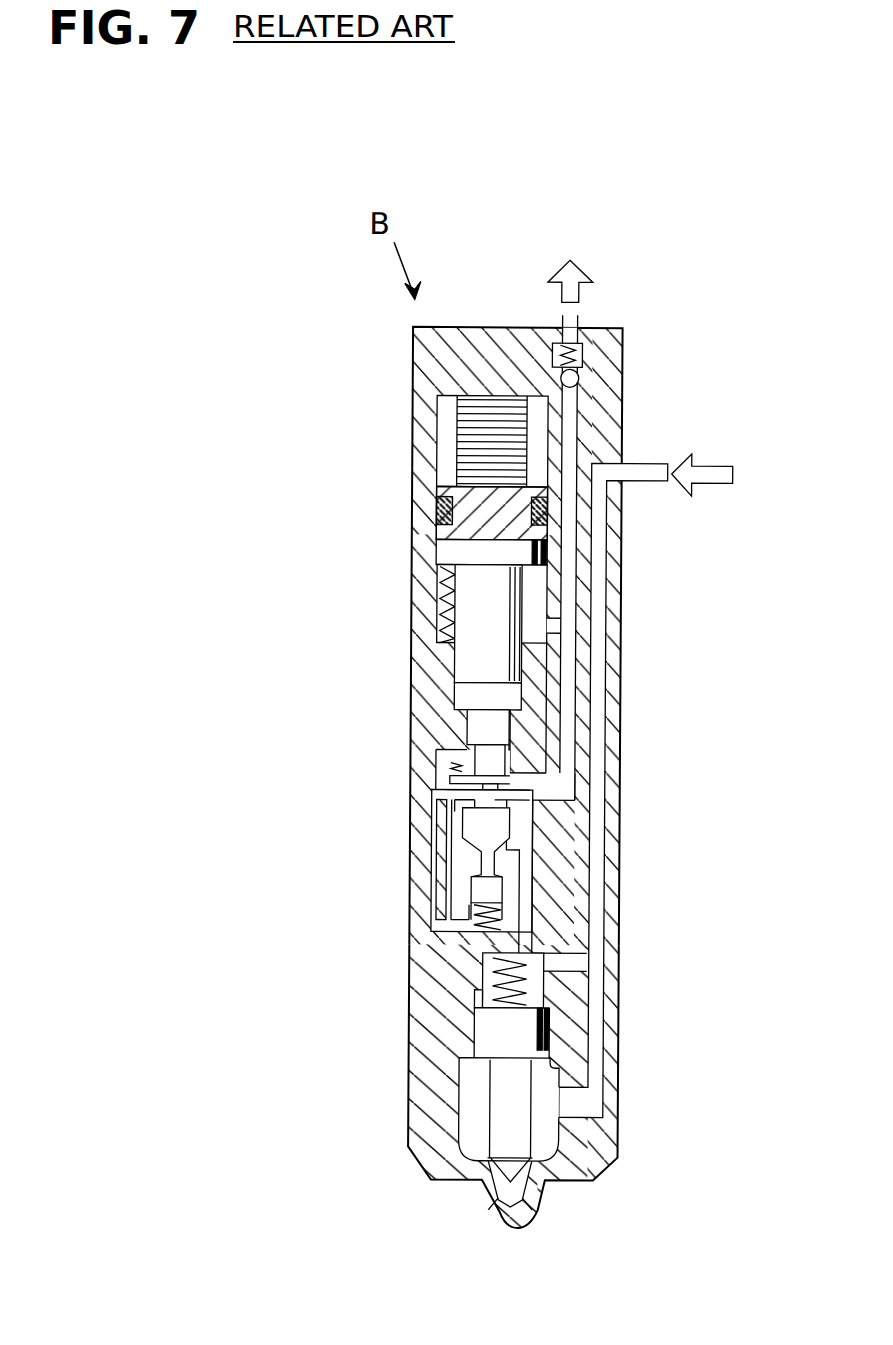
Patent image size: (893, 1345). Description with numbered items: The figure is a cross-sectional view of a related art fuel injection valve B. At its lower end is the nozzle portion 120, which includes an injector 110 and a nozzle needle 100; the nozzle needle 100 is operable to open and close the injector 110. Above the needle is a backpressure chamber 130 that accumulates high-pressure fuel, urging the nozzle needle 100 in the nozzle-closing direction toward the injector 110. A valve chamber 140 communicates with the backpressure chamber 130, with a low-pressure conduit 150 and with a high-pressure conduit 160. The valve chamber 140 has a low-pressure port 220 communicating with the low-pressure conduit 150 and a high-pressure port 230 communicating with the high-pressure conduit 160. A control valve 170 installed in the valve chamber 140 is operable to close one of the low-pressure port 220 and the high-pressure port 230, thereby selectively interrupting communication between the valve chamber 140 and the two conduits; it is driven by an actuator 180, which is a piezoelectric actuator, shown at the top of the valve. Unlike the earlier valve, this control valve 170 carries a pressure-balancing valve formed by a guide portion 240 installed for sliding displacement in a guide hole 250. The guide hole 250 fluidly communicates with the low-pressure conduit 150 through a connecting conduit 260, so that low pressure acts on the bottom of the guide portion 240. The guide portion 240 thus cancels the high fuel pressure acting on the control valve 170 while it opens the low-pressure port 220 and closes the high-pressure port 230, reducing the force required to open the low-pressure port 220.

The nozzle needle 100 is at (498, 1103).
The injector 110 is at (492, 1197).
The nozzle portion 120 is at (634, 1208).
The backpressure chamber 130 is at (497, 998).
The valve chamber 140 is at (530, 843).
The low-pressure conduit 150 is at (570, 663).
The high-pressure conduit 160 is at (598, 569).
The control valve 170 is at (505, 827).
The actuator 180 is at (454, 432).
The low-pressure port 220 is at (560, 797).
The high-pressure port 230 is at (475, 857).
The guide portion 240 is at (475, 898).
The guide hole 250 is at (502, 917).
The connecting conduit 260 is at (437, 812).